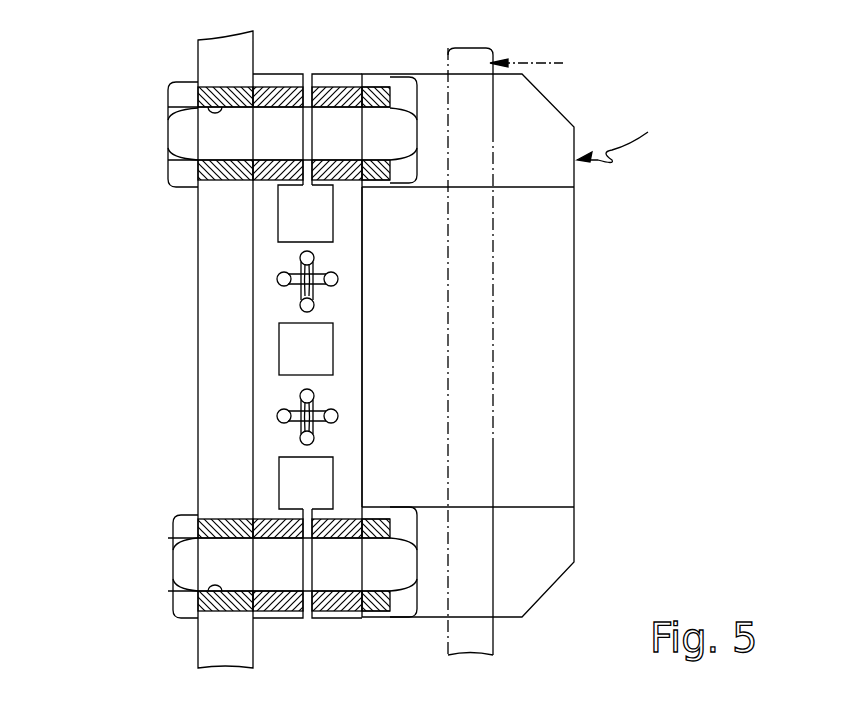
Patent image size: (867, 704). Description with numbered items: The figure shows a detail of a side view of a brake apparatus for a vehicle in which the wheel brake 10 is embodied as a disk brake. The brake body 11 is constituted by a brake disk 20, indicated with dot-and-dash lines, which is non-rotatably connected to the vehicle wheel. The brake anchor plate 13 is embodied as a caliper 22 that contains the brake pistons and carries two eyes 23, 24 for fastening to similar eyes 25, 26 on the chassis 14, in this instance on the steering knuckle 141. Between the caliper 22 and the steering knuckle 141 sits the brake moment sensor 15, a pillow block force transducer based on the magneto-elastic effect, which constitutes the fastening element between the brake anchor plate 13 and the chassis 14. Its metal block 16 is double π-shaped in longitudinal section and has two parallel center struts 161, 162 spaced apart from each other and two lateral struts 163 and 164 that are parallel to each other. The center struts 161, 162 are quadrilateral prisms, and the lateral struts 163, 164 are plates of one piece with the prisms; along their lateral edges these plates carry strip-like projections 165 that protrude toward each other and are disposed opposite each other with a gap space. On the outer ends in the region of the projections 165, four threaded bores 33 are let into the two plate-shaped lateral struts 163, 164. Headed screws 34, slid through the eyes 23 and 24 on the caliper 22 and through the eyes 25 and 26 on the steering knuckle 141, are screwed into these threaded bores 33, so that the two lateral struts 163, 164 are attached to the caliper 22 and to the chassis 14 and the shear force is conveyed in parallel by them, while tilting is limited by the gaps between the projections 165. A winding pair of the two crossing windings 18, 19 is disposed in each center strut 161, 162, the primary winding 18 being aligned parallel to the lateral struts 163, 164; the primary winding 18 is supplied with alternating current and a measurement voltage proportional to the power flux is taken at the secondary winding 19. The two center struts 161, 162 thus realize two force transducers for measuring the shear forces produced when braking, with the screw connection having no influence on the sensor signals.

The wheel brake 10 is at (623, 136).
The brake body 11 is at (539, 54).
The brake anchor plate 13 is at (580, 430).
The chassis 14 is at (193, 373).
The brake moment sensor 15 is at (367, 262).
The metal block 16 is at (342, 347).
The primary winding 18 is at (300, 268).
The secondary winding 19 is at (293, 287).
The brake disk 20 is at (477, 66).
The caliper 22 is at (543, 530).
The eye 23 is at (380, 108).
The eye 24 is at (380, 597).
The eye 25 is at (255, 72).
The eye 26 is at (215, 614).
The threaded bore 33 is at (350, 92).
The headed screw 34 is at (178, 133).
The steering knuckle 141 is at (225, 317).
The center strut 161 is at (267, 275).
The center strut 162 is at (270, 405).
The lateral strut 163 is at (342, 383).
The lateral strut 164 is at (270, 352).
The projection 165 is at (322, 82).